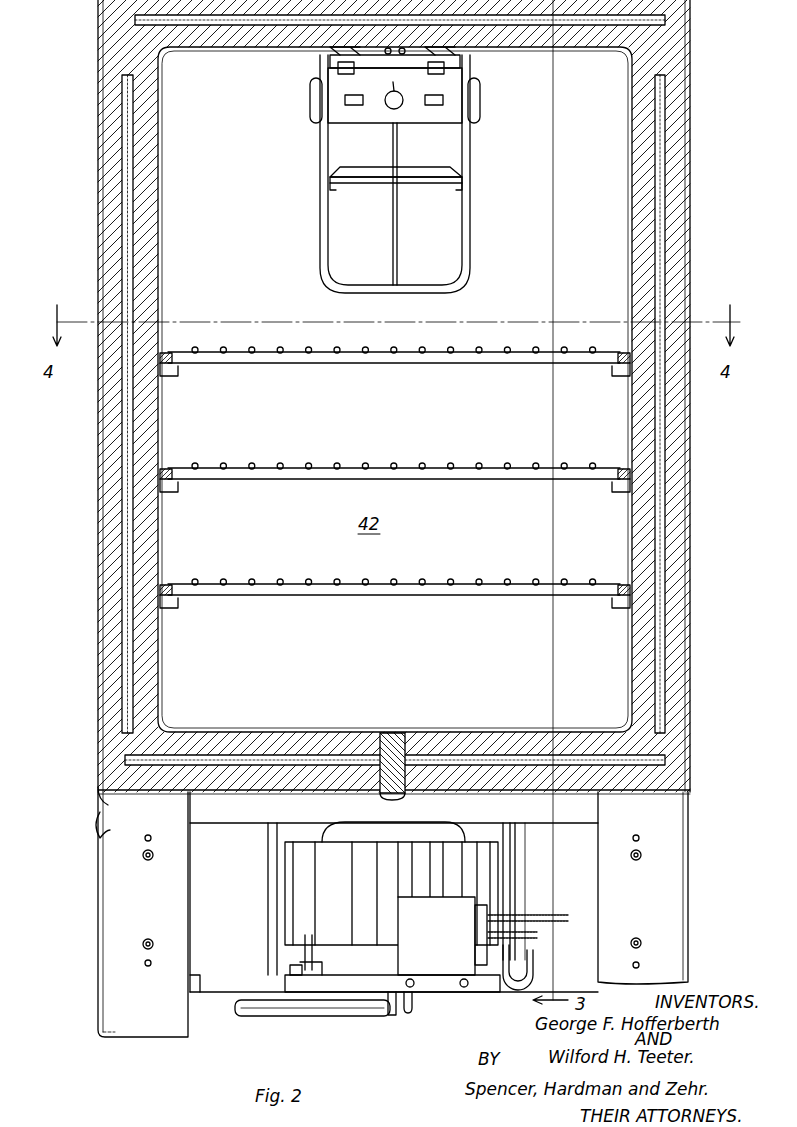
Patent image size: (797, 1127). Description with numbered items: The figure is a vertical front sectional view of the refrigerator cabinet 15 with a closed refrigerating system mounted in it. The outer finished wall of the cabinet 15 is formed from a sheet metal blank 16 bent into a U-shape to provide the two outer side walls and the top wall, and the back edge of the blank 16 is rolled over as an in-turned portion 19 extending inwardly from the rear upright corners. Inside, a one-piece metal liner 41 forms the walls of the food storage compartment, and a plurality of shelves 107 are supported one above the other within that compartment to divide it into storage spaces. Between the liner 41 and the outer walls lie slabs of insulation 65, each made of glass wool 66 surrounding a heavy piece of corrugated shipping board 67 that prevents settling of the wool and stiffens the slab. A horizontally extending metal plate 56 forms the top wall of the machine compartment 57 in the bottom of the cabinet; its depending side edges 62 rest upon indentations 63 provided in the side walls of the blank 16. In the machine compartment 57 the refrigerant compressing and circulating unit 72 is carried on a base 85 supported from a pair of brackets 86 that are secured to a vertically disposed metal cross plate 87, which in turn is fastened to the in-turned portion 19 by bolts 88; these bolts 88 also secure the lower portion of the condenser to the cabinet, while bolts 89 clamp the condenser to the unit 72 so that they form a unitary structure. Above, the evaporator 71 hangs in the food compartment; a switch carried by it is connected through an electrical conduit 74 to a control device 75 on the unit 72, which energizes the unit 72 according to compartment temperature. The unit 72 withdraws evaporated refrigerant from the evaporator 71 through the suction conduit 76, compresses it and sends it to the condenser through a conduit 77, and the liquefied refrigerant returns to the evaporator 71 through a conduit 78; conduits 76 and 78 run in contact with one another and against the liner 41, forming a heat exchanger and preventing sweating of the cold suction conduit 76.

The refrigerator cabinet 15 is at (98, 665).
The sheet metal blank 16 is at (100, 165).
The metal liner 41 is at (162, 230).
The metal plate 56 is at (355, 795).
The machine compartment 57 is at (210, 880).
The depending side edges 62 is at (105, 800).
The indentations 63 is at (110, 826).
The slabs of insulation 65 is at (680, 556).
The glass wool 66 is at (680, 486).
The corrugated shipping board 67 is at (665, 440).
The evaporator 71 is at (330, 185).
The refrigerant compressing and circulating unit 72 is at (330, 896).
The electrical conduit 74 is at (410, 52).
The control device 75 is at (442, 936).
The conduit 76 is at (405, 52).
The conduit 77 is at (415, 1005).
The conduit 78 is at (388, 52).
The base 85 is at (305, 970).
The brackets 86 is at (268, 862).
The metal cross plate 87 is at (535, 823).
The bolts 88 is at (144, 838).
The bolts 89 is at (143, 856).
The shelves 107 is at (290, 365).
The in-turned portion 19 is at (140, 913).